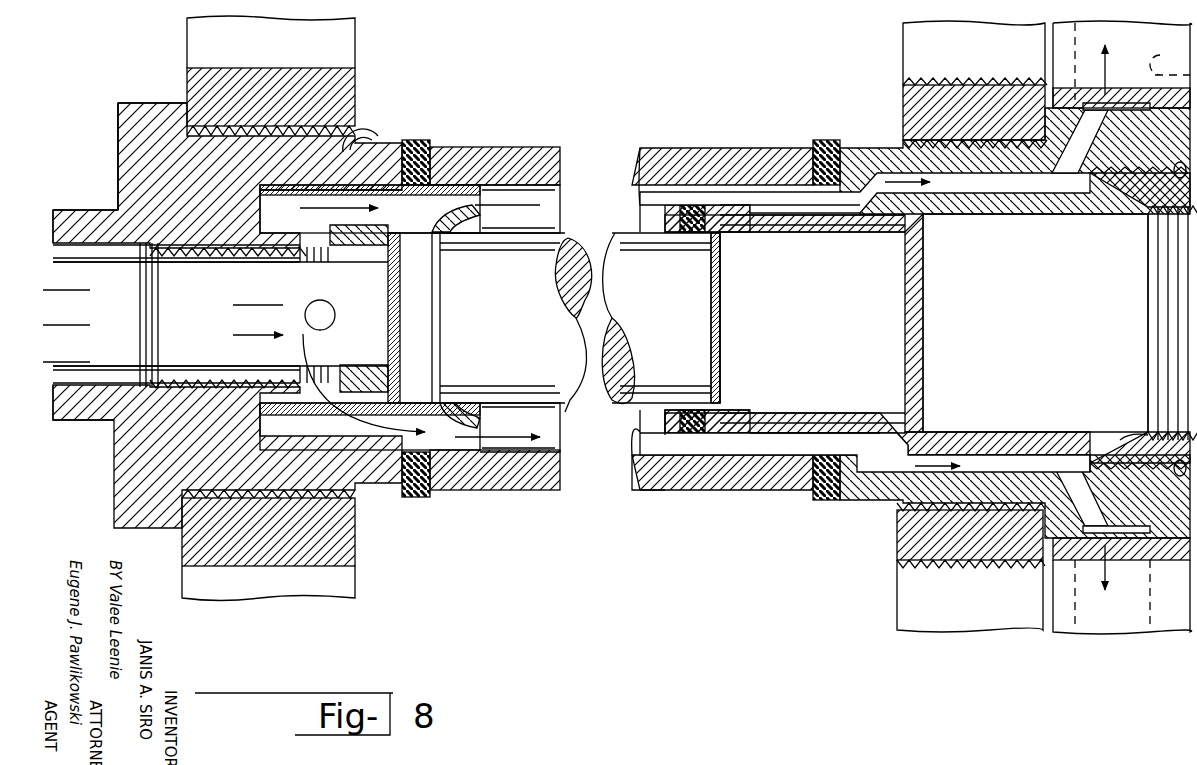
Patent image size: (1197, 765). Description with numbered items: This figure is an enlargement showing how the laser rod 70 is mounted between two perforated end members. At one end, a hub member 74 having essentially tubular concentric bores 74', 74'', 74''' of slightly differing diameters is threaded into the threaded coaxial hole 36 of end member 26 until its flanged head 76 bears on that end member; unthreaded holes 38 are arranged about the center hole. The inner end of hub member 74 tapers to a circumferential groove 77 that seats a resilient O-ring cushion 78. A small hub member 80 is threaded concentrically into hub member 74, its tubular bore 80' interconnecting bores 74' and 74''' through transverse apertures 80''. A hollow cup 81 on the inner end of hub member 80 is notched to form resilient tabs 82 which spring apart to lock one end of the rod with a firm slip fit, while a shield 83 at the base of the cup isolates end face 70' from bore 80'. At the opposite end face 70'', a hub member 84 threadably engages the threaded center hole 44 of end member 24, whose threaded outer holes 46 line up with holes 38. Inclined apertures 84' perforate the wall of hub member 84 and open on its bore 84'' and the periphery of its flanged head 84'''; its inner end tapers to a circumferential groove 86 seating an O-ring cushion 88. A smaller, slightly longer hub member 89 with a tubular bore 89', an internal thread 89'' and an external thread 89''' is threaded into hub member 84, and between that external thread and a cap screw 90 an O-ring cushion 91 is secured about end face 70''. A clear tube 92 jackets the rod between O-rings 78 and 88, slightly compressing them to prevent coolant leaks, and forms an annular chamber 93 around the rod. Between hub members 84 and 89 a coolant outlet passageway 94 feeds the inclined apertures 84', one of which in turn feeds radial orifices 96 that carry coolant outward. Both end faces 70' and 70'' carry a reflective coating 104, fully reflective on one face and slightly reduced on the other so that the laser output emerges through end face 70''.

The end member 24 is at (897, 548).
The end member 26 is at (350, 96).
The threaded coaxial hole 36 is at (355, 152).
The unthreaded holes 38 is at (187, 68).
The threaded center hole 44 is at (882, 165).
The threaded outer holes 46 is at (903, 95).
The laser rod 70 is at (661, 318).
The end face 70' is at (490, 322).
The end face 70'' is at (743, 318).
The hub member 74 is at (227, 315).
The tubular bore 74' is at (85, 288).
The tubular bore 74'' is at (174, 175).
The tubular bore 74''' is at (331, 174).
The flanged head 76 is at (132, 103).
The circumferential groove 77 is at (408, 482).
The O-ring cushion 78 is at (420, 497).
The small hub member 80 is at (370, 317).
The tubular bore 80' is at (335, 235).
The transverse apertures 80'' is at (356, 301).
The hollow cup 81 is at (408, 228).
The resilient tabs 82 is at (470, 215).
The shield 83 is at (392, 337).
The hub member 84 is at (895, 162).
The inclined apertures 84' is at (1060, 401).
The bore 84'' is at (1035, 322).
The flanged head 84''' is at (1137, 323).
The circumferential groove 86 is at (798, 185).
The O-ring cushion 88 is at (826, 148).
The hub member 89 is at (865, 438).
The tubular bore 89' is at (1071, 438).
The internal thread 89'' is at (1123, 422).
The external thread 89''' is at (815, 404).
The cap screw 90 is at (640, 458).
The O-ring cushion 91 is at (688, 436).
The clear tube 92 is at (490, 150).
The chamber 93 is at (522, 200).
The coolant outlet passageway 94 is at (832, 205).
The radial orifices 96 is at (1150, 598).
The coating 104 is at (440, 290).